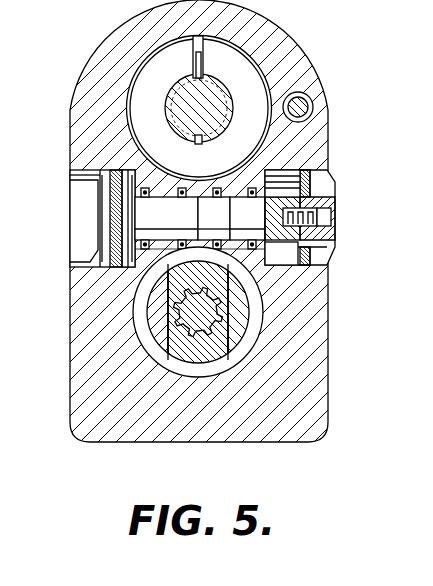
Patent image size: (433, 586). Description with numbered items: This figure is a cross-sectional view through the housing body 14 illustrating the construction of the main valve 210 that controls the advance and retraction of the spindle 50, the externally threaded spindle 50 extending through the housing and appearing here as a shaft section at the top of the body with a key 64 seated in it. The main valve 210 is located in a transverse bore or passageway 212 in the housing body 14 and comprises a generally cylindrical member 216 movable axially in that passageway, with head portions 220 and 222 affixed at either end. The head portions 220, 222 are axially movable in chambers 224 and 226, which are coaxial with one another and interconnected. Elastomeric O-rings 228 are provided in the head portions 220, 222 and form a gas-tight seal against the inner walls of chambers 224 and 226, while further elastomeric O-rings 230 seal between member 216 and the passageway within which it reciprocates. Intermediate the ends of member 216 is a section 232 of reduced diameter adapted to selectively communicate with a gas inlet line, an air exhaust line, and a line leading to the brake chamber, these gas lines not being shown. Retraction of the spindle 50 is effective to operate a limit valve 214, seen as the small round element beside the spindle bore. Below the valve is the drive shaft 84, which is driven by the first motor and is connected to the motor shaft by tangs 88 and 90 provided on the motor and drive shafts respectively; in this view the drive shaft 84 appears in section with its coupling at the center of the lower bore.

The housing body 14 is at (88, 323).
The spindle 50 is at (178, 90).
The key 64 is at (201, 74).
The limit valve 214 is at (320, 91).
The head portion 220 is at (98, 193).
The chamber 224 is at (83, 265).
The elastomeric O-rings 228 is at (110, 170).
The cylindrical member 216 is at (166, 218).
The section of reduced diameter 232 is at (215, 212).
The elastomeric O-rings 230 is at (247, 218).
The transverse passageway 212 is at (240, 249).
The main valve 210 is at (336, 181).
The chamber 226 is at (300, 160).
The head portion 222 is at (337, 201).
The tang 90 is at (245, 320).
The drive shaft 84 is at (206, 330).
The tang 88 is at (188, 355).